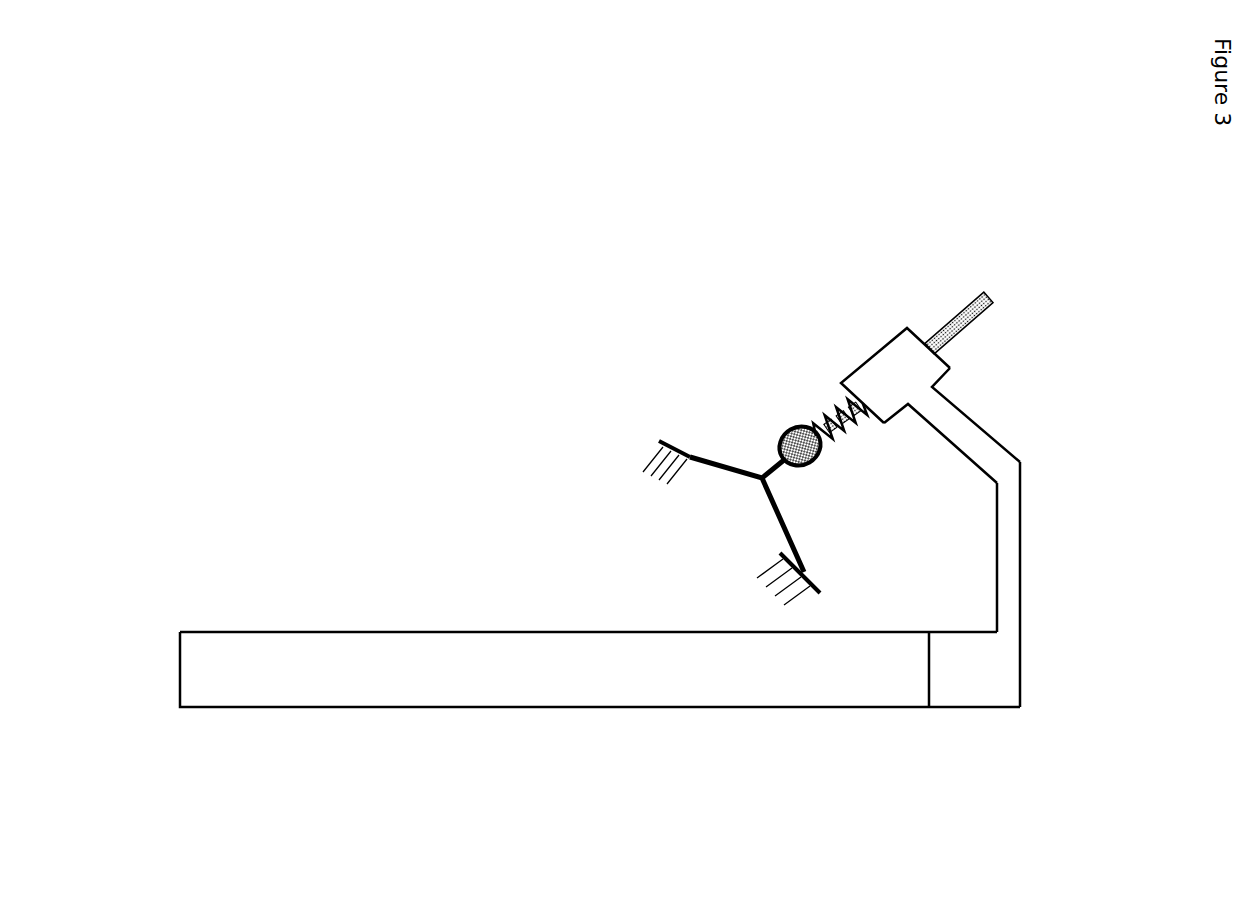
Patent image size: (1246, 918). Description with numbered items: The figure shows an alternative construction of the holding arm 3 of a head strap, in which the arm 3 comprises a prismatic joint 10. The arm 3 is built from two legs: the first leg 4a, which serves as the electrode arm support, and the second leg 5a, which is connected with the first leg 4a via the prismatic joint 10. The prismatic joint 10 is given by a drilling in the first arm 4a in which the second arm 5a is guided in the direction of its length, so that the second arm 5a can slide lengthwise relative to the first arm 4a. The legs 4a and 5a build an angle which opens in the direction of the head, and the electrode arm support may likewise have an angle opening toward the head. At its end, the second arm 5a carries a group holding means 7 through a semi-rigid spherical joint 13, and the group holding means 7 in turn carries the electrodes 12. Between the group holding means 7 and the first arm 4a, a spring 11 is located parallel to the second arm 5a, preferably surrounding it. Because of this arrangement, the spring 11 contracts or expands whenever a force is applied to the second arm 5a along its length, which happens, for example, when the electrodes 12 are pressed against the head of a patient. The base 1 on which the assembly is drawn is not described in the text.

The base 1 is at (542, 707).
The arm 3 is at (1001, 461).
The first leg 4a is at (1022, 575).
The second leg 5a is at (993, 300).
The group holding means 7 is at (724, 455).
The prismatic joint 10 is at (946, 362).
The spring 11 is at (817, 401).
The electrodes 12 is at (749, 572).
The semi-rigid spherical joint 13 is at (789, 432).